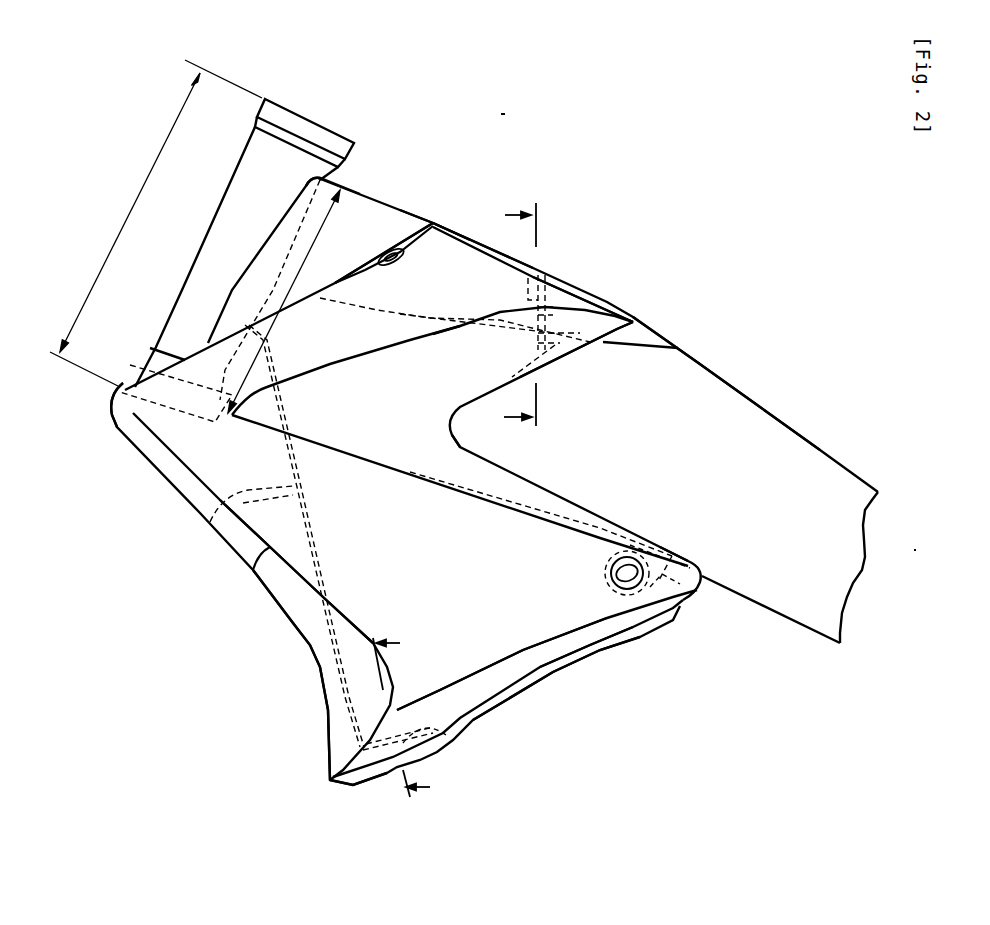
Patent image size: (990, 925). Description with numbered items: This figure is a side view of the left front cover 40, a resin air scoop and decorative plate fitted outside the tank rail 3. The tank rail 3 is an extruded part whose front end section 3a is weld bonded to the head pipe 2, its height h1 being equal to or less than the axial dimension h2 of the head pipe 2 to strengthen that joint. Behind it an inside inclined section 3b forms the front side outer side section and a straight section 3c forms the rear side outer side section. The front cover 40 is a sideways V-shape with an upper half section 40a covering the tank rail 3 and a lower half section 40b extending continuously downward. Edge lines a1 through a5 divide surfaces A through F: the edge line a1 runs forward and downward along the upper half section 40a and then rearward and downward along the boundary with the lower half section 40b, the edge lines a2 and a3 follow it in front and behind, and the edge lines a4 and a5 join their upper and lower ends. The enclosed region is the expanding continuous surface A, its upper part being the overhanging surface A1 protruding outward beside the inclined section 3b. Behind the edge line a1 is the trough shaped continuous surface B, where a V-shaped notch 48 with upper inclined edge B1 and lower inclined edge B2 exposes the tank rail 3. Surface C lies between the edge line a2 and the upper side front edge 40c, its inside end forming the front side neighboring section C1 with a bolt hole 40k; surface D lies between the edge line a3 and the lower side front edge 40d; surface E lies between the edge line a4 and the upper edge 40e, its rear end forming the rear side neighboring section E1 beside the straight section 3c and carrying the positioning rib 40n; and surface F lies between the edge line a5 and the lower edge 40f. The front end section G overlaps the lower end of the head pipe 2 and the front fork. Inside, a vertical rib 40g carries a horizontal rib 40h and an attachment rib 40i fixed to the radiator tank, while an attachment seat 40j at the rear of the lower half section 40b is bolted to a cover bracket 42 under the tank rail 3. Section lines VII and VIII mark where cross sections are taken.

The head pipe 2 is at (225, 192).
The tank rail 3 is at (825, 450).
The front end section 3a is at (363, 300).
The inclined section 3b is at (417, 297).
The straight section 3c is at (697, 364).
The front cover 40 is at (228, 557).
The upper half section 40a is at (606, 299).
The lower half section 40b is at (333, 783).
The upper side front edge 40c is at (313, 267).
The lower side front edge 40d is at (297, 625).
The upper edge 40e is at (577, 290).
The lower edge 40f is at (521, 663).
The vertical rib 40g is at (330, 700).
The horizontal rib 40h is at (227, 500).
The attachment rib 40i is at (453, 740).
The attachment seat 40j is at (628, 590).
The bolt hole 40k is at (428, 238).
The positioning rib 40n is at (537, 267).
The cover bracket 42 is at (673, 598).
The notch 48 is at (550, 487).
The expanding continuous surface A is at (313, 364).
The overhanging surface A1 is at (443, 222).
The trough shaped continuous surface B is at (402, 398).
The upper inclined edge B1 is at (570, 360).
The lower inclined edge B2 is at (610, 520).
The upper side vehicle width direction continuous surface C is at (345, 277).
The front side neighboring section C1 is at (391, 247).
The lower side vehicle width direction continuous surface D is at (283, 588).
The upper edge continuous surface E is at (463, 238).
The rear side neighboring section E1 is at (553, 277).
The lower edge continuous surface F is at (530, 665).
The front end section G is at (108, 406).
The edge line a1 is at (377, 463).
The edge line a2 is at (368, 305).
The edge line a3 is at (253, 572).
The edge line a4 is at (473, 245).
The edge line a5 is at (567, 655).
The upward-downward direction dimension h1 is at (318, 232).
The axial direction dimension h2 is at (143, 183).
The section line VII is at (502, 318).
The section line VIII is at (420, 714).